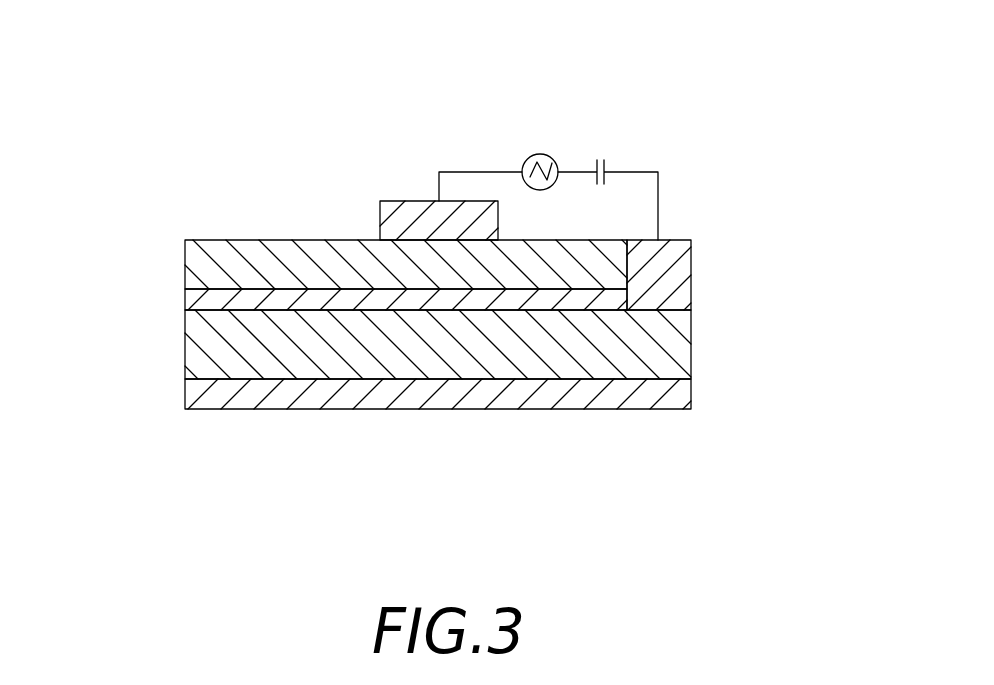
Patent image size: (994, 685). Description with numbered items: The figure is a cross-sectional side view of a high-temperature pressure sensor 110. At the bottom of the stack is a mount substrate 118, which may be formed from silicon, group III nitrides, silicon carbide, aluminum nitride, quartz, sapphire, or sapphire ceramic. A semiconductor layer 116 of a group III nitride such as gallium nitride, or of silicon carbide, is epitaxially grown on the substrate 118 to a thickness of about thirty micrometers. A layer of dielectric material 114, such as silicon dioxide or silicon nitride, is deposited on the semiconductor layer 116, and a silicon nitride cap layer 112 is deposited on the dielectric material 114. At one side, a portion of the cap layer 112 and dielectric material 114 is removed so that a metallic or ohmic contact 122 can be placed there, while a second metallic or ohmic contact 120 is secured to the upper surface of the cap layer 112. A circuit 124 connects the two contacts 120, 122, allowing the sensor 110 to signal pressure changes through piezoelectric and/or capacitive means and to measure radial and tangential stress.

The high-temperature pressure sensor 110 is at (713, 155).
The silicon nitride cap layer 112 is at (203, 253).
The dielectric material 114 is at (222, 299).
The semiconductor layer 116 is at (688, 345).
The mount substrate 118 is at (660, 400).
The metallic or ohmic contact 120 is at (385, 200).
The metallic or ohmic contact 122 is at (683, 268).
The circuit 124 is at (490, 172).